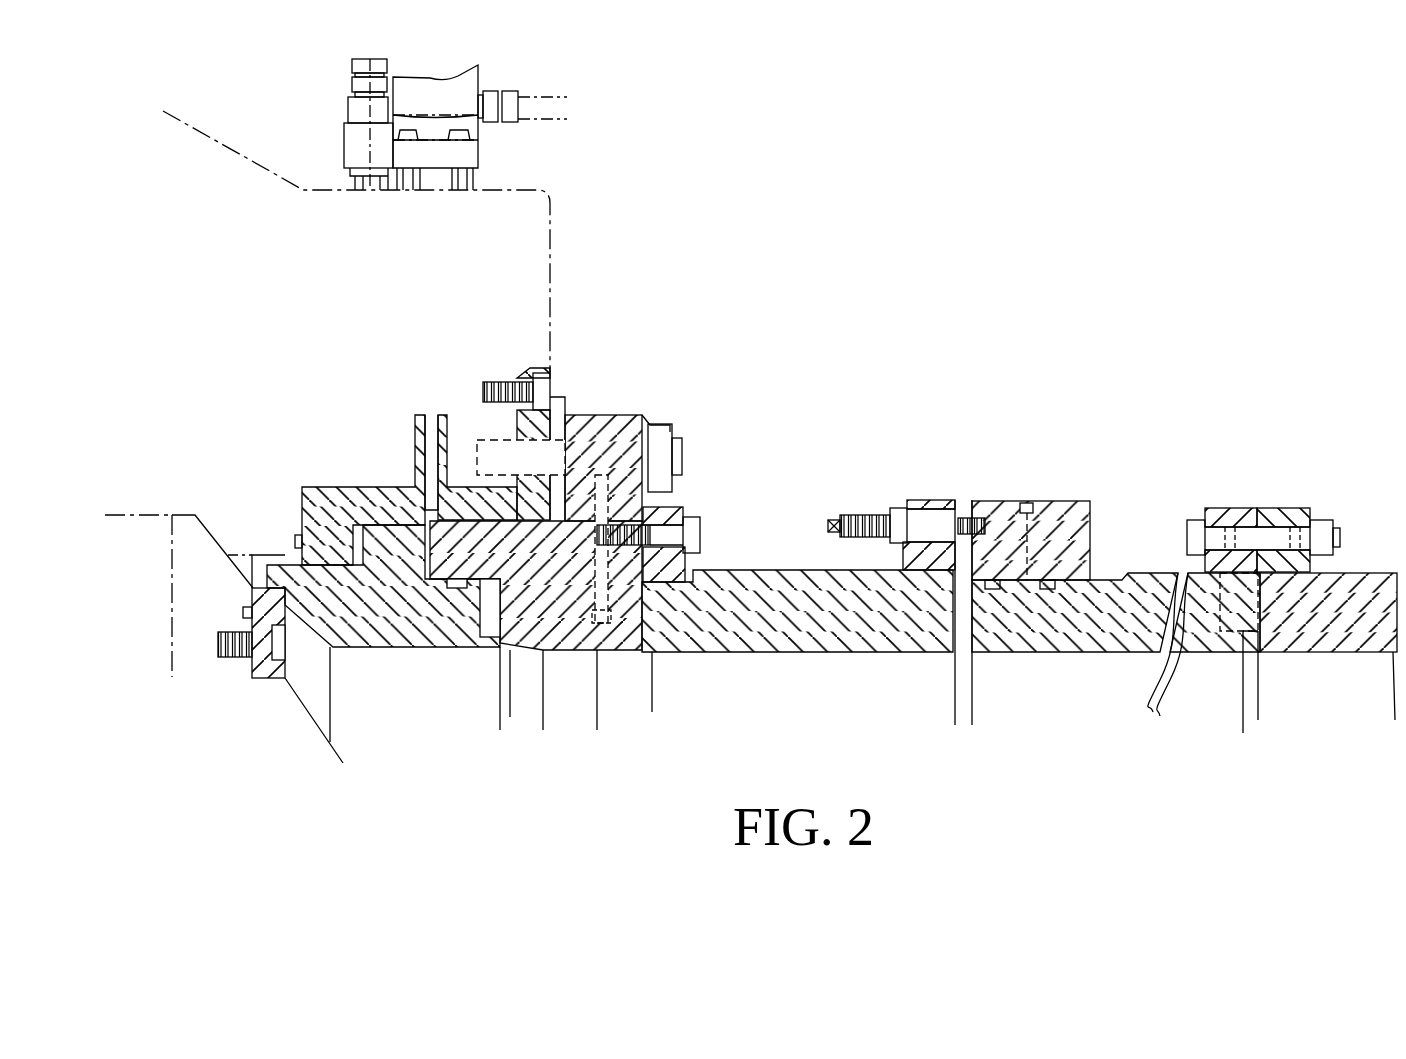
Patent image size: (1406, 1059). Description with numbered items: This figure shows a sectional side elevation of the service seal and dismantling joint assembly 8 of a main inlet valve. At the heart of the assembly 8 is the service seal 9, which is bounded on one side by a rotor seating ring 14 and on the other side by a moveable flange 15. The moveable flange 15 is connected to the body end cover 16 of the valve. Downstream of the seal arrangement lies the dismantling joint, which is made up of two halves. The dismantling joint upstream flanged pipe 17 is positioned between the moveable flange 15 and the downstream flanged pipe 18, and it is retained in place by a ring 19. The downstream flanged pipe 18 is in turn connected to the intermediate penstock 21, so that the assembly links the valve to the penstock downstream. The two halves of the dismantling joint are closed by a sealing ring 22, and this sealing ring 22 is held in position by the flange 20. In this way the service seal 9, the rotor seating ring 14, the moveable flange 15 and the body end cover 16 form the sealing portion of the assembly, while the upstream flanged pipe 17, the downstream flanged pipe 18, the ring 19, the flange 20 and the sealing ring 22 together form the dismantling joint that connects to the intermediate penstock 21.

The assembly 8 is at (618, 363).
The service seal 9 is at (417, 630).
The rotor seating ring 14 is at (262, 600).
The moveable flange 15 is at (588, 630).
The body end cover 16 is at (289, 380).
The dismantling joint upstream flanged pipe 17 is at (775, 587).
The downstream flanged pipe 18 is at (1110, 632).
The ring 19 is at (690, 505).
The flange 20 is at (925, 500).
The intermediate penstock 21 is at (1340, 633).
The sealing ring 22 is at (1068, 500).